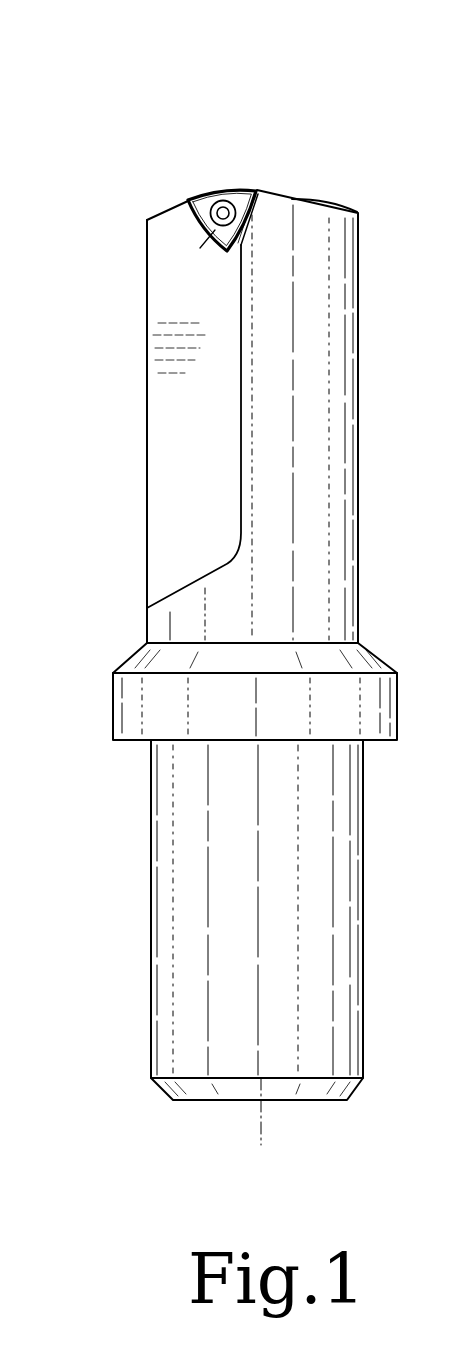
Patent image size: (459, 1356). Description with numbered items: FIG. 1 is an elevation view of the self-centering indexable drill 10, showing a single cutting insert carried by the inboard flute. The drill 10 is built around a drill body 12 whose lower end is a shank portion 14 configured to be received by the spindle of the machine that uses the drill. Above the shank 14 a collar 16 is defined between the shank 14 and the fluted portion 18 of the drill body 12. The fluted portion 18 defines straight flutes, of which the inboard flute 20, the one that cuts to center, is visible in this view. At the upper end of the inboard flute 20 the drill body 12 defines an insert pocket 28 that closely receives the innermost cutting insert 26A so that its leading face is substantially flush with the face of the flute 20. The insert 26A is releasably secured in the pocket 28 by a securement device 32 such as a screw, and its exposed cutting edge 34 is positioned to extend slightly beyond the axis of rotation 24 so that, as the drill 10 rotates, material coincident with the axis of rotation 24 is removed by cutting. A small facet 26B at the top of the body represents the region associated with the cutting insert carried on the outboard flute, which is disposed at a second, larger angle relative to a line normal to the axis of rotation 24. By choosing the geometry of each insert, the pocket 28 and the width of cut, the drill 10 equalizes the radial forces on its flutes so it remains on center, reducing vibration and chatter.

The drill 10 is at (381, 86).
The drill body 12 is at (372, 292).
The shank portion 14 is at (313, 948).
The collar 16 is at (380, 744).
The fluted portion 18 is at (318, 372).
The inboard flute 20 is at (187, 460).
The axis of rotation 24 is at (250, 193).
The innermost cutting insert 26A is at (213, 192).
The cutting insert 26B is at (327, 201).
The insert pocket 28 is at (205, 247).
The securement device 32 is at (222, 190).
The cutting edge 34 is at (189, 197).